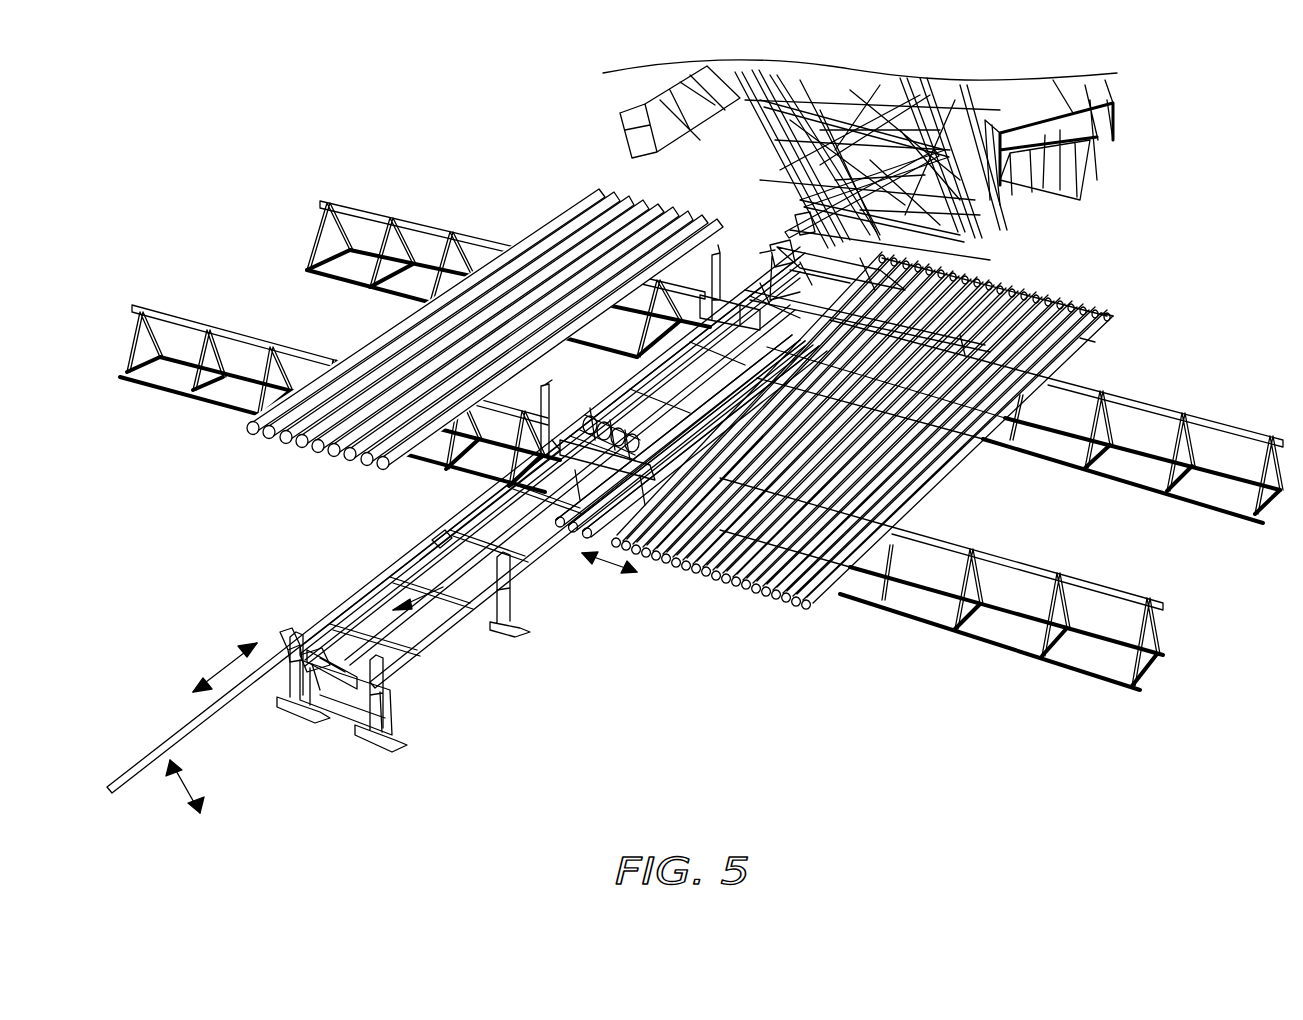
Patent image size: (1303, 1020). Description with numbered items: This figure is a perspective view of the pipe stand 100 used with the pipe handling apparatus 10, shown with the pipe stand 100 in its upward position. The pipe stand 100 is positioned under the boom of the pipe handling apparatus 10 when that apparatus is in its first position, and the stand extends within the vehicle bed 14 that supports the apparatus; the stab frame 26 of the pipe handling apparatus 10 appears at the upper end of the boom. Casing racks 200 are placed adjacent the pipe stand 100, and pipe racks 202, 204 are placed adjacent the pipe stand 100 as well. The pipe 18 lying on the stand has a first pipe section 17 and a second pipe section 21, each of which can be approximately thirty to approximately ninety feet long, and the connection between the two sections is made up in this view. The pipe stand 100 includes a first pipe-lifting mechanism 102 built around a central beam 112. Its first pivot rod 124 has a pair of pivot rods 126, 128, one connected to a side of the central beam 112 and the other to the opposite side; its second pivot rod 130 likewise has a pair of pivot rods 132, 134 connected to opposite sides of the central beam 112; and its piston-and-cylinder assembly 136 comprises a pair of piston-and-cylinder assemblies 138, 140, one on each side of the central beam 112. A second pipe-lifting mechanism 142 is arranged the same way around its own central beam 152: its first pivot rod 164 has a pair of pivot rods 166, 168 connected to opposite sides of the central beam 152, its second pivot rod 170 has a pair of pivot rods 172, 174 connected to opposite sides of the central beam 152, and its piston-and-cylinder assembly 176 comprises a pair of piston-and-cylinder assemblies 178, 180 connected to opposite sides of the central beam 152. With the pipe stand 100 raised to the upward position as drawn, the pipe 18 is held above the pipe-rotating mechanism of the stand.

The pipe handling apparatus 10 is at (1145, 127).
The bed 14 is at (392, 683).
The first pipe section 17 is at (190, 720).
The pipe 18 is at (338, 599).
The second pipe section 21 is at (790, 217).
The stab frame 26 is at (619, 133).
The pipe stand 100 is at (431, 101).
The first pipe-lifting mechanism 102 is at (528, 597).
The central beam 112 is at (316, 618).
The first pivot rod 124 is at (330, 680).
The pivot rod 126 is at (320, 667).
The pivot rod 128 is at (312, 680).
The second pivot rod 130 is at (437, 535).
The pivot rod 132 is at (420, 552).
The pivot rod 134 is at (400, 577).
The piston-and-cylinder assembly 136 is at (447, 633).
The piston-and-cylinder assembly 138 is at (377, 643).
The piston-and-cylinder assembly 140 is at (397, 670).
The second pipe-lifting mechanism 142 is at (769, 242).
The central beam 152 is at (700, 255).
The first pivot rod 164 is at (715, 385).
The pivot rod 166 is at (672, 397).
The pivot rod 168 is at (690, 377).
The second pivot rod 170 is at (1075, 302).
The pivot rod 172 is at (1105, 322).
The pivot rod 174 is at (1080, 342).
The piston-and-cylinder assembly 176 is at (640, 367).
The piston-and-cylinder assembly 178 is at (880, 500).
The piston-and-cylinder assembly 180 is at (850, 356).
The casing racks 200 is at (387, 337).
The pipe rack 202 is at (925, 272).
The pipe rack 204 is at (945, 282).